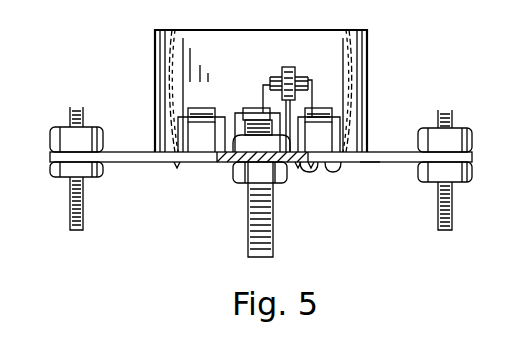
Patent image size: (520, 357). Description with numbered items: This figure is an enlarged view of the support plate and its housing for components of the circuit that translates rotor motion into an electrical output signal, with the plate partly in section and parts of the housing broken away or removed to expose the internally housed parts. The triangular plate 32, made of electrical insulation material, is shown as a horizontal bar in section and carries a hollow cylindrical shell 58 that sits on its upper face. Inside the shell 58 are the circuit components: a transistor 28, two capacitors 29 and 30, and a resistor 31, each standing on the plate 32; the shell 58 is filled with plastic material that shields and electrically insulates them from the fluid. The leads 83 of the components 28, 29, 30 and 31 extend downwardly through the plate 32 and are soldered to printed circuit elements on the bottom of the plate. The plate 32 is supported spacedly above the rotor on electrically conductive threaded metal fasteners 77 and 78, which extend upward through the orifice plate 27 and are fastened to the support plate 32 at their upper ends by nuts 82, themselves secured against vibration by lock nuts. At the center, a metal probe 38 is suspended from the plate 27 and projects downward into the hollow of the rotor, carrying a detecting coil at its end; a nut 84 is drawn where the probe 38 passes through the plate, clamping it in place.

The hollow cylindrical shell 58 is at (367, 60).
The transistor 28 is at (287, 67).
The capacitor 29 is at (195, 108).
The capacitor 30 is at (316, 108).
The resistor 31 is at (256, 108).
The triangular plate 32 is at (473, 160).
The orifice plate 27 is at (368, 163).
The nut 82 is at (466, 127).
The leads 83 is at (306, 166).
The center nut 84 is at (233, 175).
The metal probe 38 is at (273, 240).
The threaded metal fastener 77 is at (85, 215).
The threaded metal fastener 78 is at (453, 196).